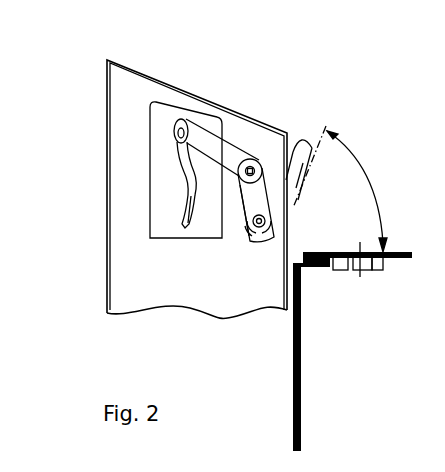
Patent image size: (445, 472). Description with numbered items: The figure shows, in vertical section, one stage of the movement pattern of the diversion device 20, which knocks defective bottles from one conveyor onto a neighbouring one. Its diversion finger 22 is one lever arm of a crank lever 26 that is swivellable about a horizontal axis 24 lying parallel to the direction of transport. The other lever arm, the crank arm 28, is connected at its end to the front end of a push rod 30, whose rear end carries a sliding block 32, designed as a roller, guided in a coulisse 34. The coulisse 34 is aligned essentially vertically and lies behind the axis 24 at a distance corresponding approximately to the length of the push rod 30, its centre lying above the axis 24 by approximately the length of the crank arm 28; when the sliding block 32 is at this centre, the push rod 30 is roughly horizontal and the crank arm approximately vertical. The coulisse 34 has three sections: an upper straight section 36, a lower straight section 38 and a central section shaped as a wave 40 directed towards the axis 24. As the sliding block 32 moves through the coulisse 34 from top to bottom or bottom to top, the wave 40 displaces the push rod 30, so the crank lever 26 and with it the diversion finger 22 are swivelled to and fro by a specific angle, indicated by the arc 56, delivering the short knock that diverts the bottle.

The diversion device 20 is at (197, 189).
The diversion finger 22 is at (305, 140).
The horizontal axis 24 is at (268, 222).
The crank lever 26 is at (256, 235).
The crank arm 28 is at (243, 226).
The push rod 30 is at (231, 152).
The sliding block 32 is at (185, 127).
The coulisse 34 is at (181, 202).
The upper straight section 36 is at (178, 141).
The lower straight section 38 is at (150, 239).
The wave 40 is at (186, 172).
The pivot angle 56 is at (362, 191).